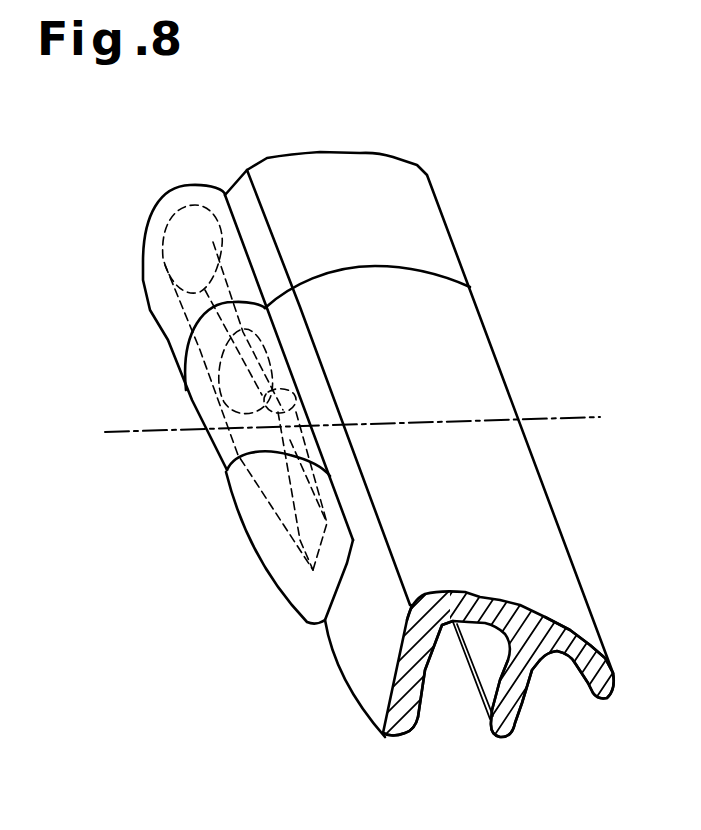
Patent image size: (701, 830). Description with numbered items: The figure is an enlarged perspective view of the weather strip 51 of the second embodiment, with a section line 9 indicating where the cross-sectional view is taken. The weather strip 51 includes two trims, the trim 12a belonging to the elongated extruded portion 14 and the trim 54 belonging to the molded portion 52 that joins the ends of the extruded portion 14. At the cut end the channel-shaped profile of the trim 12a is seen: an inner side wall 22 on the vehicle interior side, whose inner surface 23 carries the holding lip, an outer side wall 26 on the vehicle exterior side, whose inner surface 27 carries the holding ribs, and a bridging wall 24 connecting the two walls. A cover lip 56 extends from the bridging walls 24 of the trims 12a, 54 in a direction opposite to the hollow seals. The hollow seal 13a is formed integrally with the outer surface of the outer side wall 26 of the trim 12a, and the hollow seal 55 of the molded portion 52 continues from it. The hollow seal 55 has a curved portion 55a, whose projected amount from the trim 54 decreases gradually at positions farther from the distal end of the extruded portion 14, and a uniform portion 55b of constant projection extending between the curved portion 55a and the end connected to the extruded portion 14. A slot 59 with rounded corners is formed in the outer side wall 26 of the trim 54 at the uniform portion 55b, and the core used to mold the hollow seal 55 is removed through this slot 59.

The trim 12a is at (288, 168).
The hollow seal 13a is at (172, 192).
The extruded portion 14 is at (232, 192).
The weather strip 51 is at (562, 168).
The trim 54 is at (432, 320).
The hollow seal 55 is at (200, 402).
The curved portion 55a is at (270, 567).
The uniform portion 55b is at (218, 443).
The slot 59 is at (273, 412).
The molded portion 52 is at (352, 660).
The bridging wall 24 is at (485, 602).
The cover lip 56 is at (592, 625).
The outer side wall 26 is at (398, 737).
The inner surface 27 is at (416, 710).
The inner surface 23 is at (487, 726).
The inner side wall 22 is at (513, 732).
The section line 9- 9 is at (583, 377).